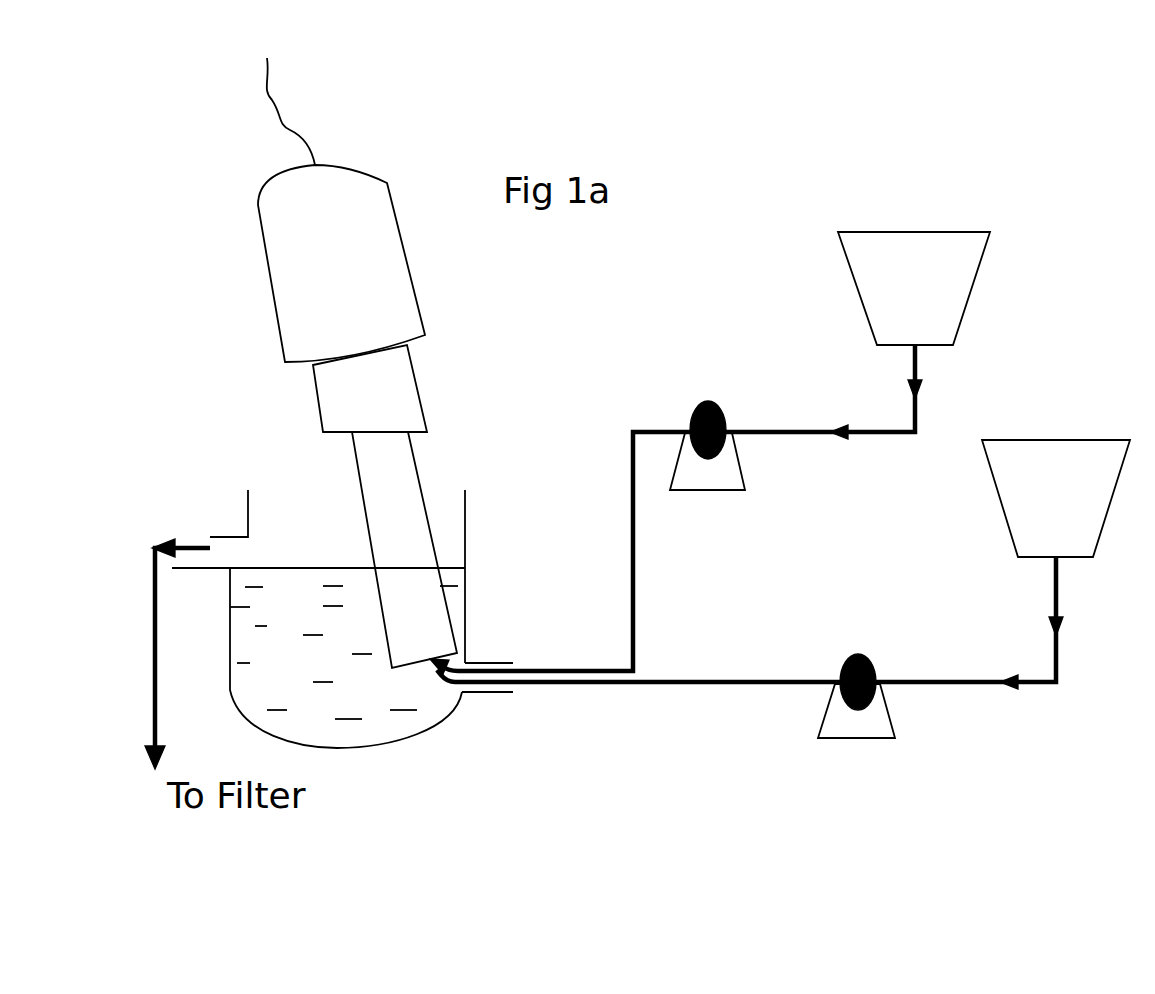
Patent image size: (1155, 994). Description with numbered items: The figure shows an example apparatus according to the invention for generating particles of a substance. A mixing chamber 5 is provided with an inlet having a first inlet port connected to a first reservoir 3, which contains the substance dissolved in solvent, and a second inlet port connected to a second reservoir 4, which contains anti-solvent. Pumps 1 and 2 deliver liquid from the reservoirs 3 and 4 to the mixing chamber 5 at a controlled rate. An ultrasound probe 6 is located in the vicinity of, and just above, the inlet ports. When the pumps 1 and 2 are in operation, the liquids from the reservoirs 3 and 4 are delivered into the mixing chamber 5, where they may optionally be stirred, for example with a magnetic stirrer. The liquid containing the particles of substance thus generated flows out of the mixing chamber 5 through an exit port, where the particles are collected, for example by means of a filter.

The pump 1 is at (710, 415).
The pump 2 is at (856, 664).
The first reservoir 3 is at (928, 288).
The second reservoir 4 is at (1051, 499).
The mixing chamber 5 is at (329, 635).
The ultrasound probe 6 is at (342, 363).